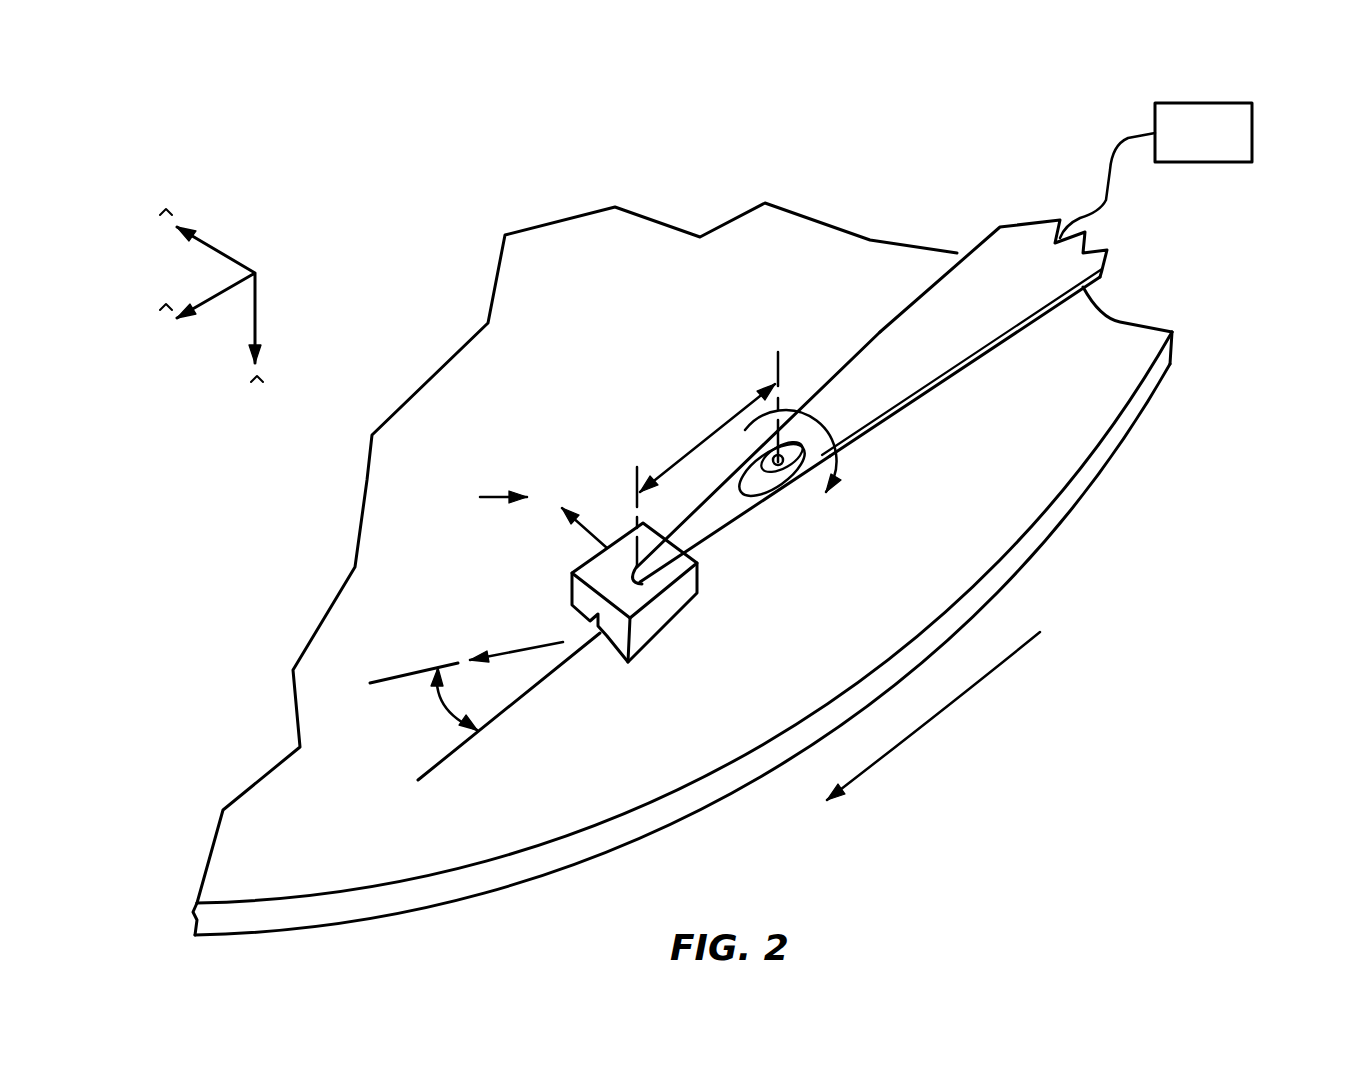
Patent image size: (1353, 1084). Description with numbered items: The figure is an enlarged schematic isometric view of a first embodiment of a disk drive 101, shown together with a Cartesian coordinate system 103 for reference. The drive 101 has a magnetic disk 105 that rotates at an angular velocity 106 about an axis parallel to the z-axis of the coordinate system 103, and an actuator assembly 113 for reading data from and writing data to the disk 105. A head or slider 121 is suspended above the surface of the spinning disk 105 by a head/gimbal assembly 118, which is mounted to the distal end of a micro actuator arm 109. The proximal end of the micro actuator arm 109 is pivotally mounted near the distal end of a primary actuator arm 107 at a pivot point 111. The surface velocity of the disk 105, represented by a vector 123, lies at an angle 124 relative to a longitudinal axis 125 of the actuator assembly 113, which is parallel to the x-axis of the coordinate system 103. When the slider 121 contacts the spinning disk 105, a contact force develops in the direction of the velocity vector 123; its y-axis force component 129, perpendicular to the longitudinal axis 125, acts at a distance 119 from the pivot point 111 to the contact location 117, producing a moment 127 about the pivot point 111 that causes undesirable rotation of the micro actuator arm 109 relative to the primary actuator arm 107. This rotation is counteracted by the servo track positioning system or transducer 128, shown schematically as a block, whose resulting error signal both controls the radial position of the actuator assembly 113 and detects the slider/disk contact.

The disk drive 101 is at (1027, 837).
The Cartesian coordinate system 103 is at (240, 262).
The magnetic disk 105 is at (1103, 448).
The angular velocity 106 is at (960, 703).
The primary actuator arm 107 is at (1025, 240).
The micro actuator arm 109 is at (722, 528).
The pivot point 111 is at (780, 456).
The actuator assembly 113 is at (471, 492).
The location of slider/disk contact 117 is at (633, 473).
The head/gimbal assembly 118 is at (650, 592).
The distance 119 is at (720, 427).
The slider 121 is at (597, 578).
The surface velocity vector 123 is at (510, 652).
The angle 124 is at (440, 703).
The longitudinal axis 125 is at (533, 690).
The moment 127 is at (830, 471).
The transducer 128 is at (1253, 130).
The y-axis force component 129 is at (597, 538).